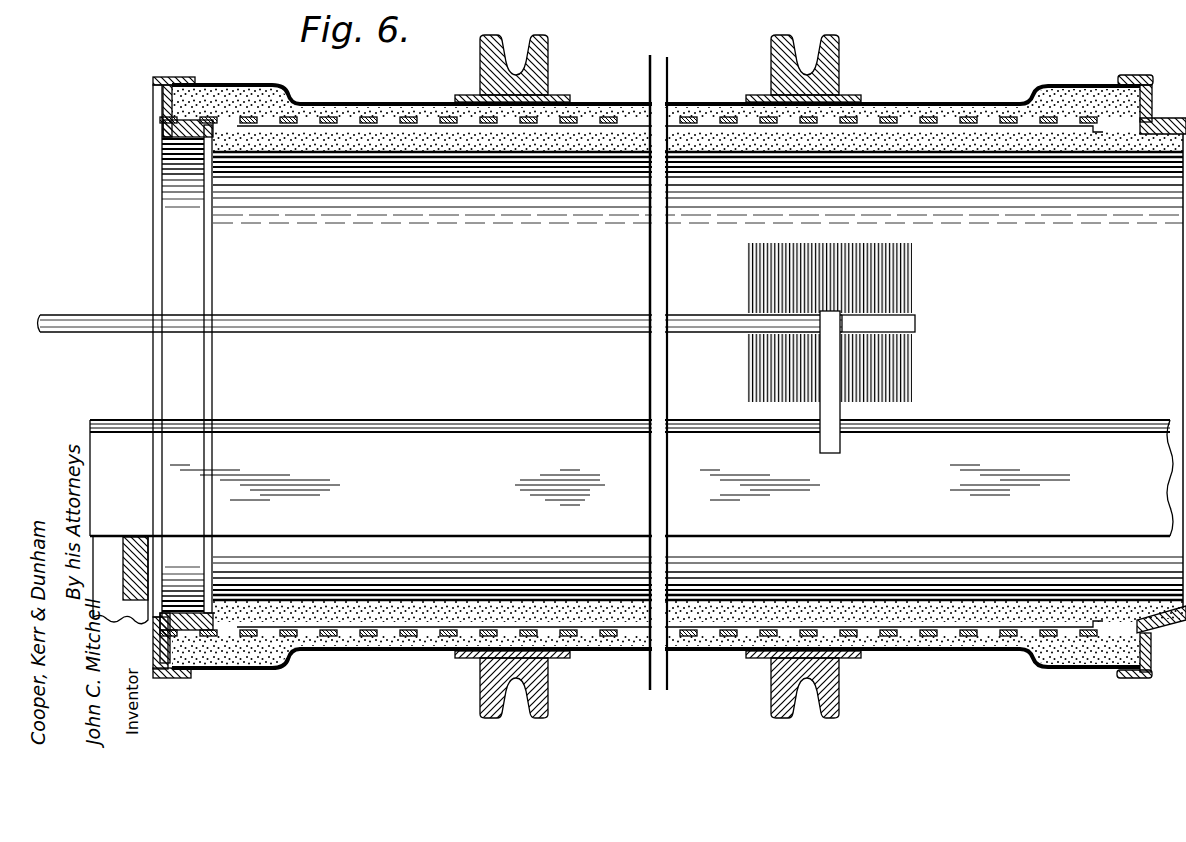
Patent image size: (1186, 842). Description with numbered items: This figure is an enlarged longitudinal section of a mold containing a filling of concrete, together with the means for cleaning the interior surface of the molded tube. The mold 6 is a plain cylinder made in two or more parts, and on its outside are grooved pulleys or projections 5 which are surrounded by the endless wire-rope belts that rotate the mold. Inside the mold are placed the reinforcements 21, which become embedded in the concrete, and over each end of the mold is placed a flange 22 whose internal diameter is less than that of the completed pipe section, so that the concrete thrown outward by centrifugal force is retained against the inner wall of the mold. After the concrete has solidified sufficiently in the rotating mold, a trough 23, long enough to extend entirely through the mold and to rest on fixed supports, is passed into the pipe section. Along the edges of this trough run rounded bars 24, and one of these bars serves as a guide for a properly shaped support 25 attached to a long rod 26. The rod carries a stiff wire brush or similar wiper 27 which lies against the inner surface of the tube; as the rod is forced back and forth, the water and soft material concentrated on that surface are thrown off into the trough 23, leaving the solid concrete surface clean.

The grooved pulleys 5 is at (549, 60).
The mold 6 is at (975, 103).
The reinforcements 21 is at (382, 125).
The flanges 22 is at (158, 113).
The trough 23 is at (631, 478).
The rounded bars 24 is at (482, 433).
The support 25 is at (826, 405).
The rod 26 is at (483, 319).
The wire brush 27 is at (897, 289).